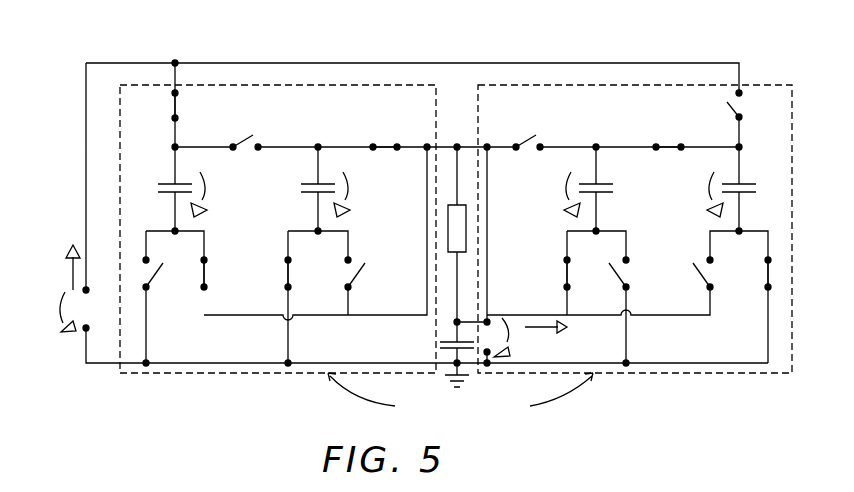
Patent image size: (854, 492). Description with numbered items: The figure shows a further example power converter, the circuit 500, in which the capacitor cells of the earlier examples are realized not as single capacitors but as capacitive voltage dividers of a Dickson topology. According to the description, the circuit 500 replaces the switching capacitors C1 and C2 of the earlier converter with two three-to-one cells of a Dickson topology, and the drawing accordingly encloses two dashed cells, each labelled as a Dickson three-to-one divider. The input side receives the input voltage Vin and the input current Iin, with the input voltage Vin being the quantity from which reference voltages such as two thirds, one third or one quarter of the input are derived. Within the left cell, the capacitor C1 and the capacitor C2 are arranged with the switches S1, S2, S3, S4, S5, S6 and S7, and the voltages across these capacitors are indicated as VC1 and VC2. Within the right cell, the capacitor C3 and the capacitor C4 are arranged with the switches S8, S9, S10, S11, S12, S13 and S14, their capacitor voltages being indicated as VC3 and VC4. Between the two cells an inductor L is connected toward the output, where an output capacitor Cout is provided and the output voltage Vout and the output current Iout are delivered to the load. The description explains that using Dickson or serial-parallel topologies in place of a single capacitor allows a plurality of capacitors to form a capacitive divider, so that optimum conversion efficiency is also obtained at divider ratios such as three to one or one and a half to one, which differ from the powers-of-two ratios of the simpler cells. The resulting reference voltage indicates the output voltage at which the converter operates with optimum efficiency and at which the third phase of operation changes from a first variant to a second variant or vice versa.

The circuit 500 is at (137, 48).
The switch S1 is at (163, 105).
The switch S2 is at (144, 273).
The switch S3 is at (192, 273).
The switch S4 is at (245, 132).
The switch S5 is at (276, 273).
The switch S6 is at (343, 273).
The switch S7 is at (385, 132).
The switch S8 is at (746, 105).
The switch S9 is at (778, 273).
The switch S10 is at (718, 273).
The switch S11 is at (668, 132).
The switch S12 is at (634, 273).
The switch S13 is at (579, 273).
The switch S14 is at (528, 132).
The switching capacitor C1 is at (161, 190).
The switching capacitor C2 is at (303, 190).
The flying capacitor C3 is at (753, 190).
The flying capacitor C4 is at (610, 190).
The inductor L is at (452, 234).
The output capacitor Cout is at (434, 336).
The capacitor C1 voltage VC1 is at (212, 194).
The capacitor C2 voltage VC2 is at (355, 194).
The capacitor C3 voltage VC3 is at (702, 194).
The capacitor C4 voltage VC4 is at (557, 194).
The input voltage Vin is at (51, 312).
The input current Iin is at (58, 267).
The output voltage Vout is at (517, 338).
The output current Iout is at (561, 333).